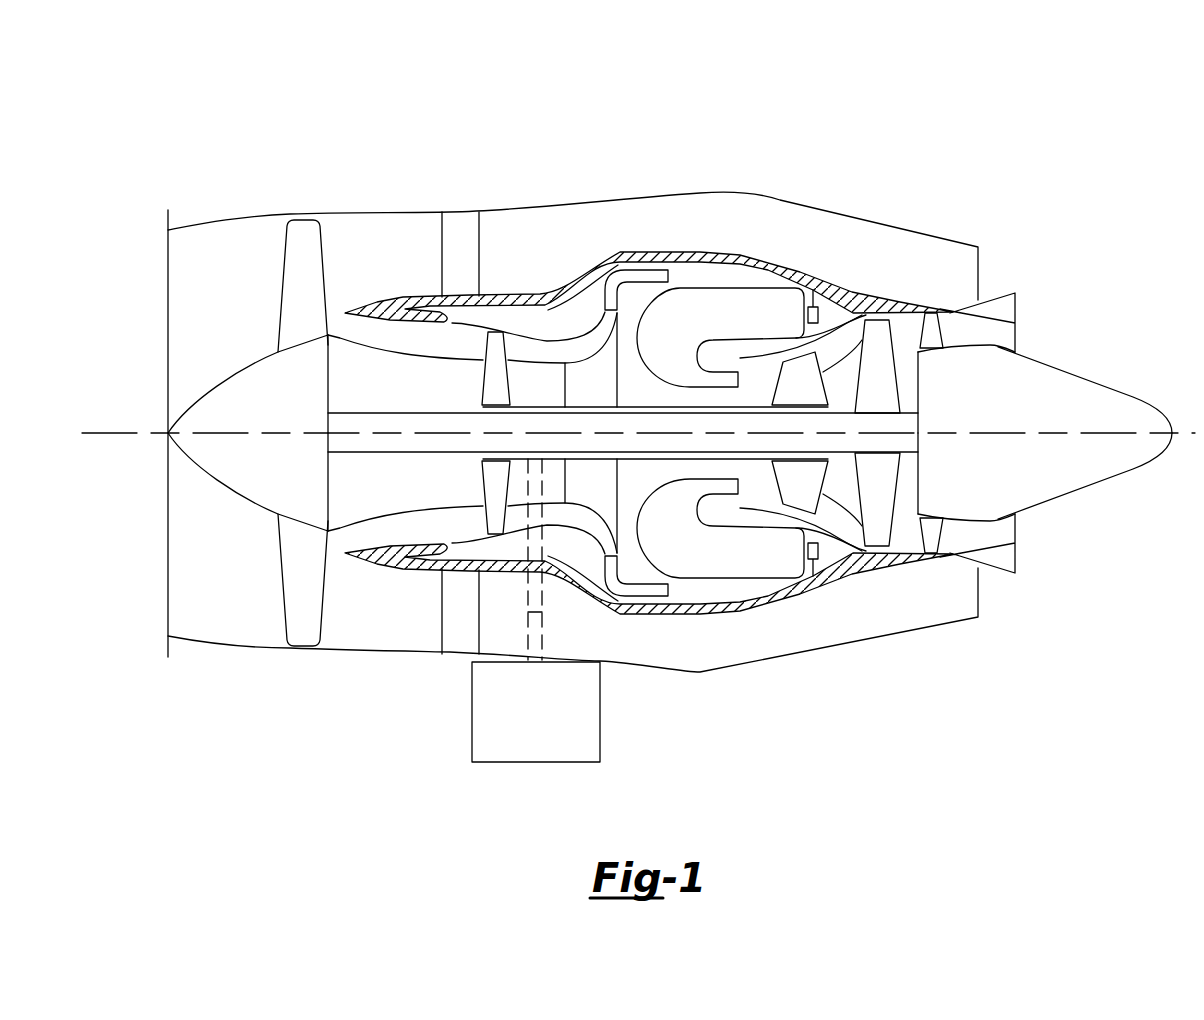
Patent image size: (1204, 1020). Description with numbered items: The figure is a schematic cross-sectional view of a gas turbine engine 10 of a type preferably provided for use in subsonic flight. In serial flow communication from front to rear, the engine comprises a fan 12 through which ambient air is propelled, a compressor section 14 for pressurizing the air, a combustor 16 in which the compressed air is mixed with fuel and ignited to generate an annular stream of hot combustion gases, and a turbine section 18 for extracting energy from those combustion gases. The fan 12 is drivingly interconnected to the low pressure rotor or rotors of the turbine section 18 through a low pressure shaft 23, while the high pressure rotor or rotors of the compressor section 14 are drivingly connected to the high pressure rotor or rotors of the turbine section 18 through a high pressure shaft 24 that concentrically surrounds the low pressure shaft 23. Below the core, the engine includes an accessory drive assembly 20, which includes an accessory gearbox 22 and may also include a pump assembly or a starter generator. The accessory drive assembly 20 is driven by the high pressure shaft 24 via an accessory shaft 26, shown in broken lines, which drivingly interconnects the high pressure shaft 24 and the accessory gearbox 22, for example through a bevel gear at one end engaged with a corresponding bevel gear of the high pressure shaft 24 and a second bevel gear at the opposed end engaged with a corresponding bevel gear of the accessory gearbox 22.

The gas turbine engine 10 is at (638, 433).
The fan 12 is at (300, 572).
The compressor section 14 is at (550, 353).
The combustor 16 is at (725, 300).
The turbine section 18 is at (840, 492).
The accessory drive assembly 20 is at (529, 648).
The accessory gearbox 22 is at (560, 745).
The low pressure shaft 23 is at (360, 413).
The high pressure shaft 24 is at (822, 495).
The accessory shaft 26 is at (542, 615).